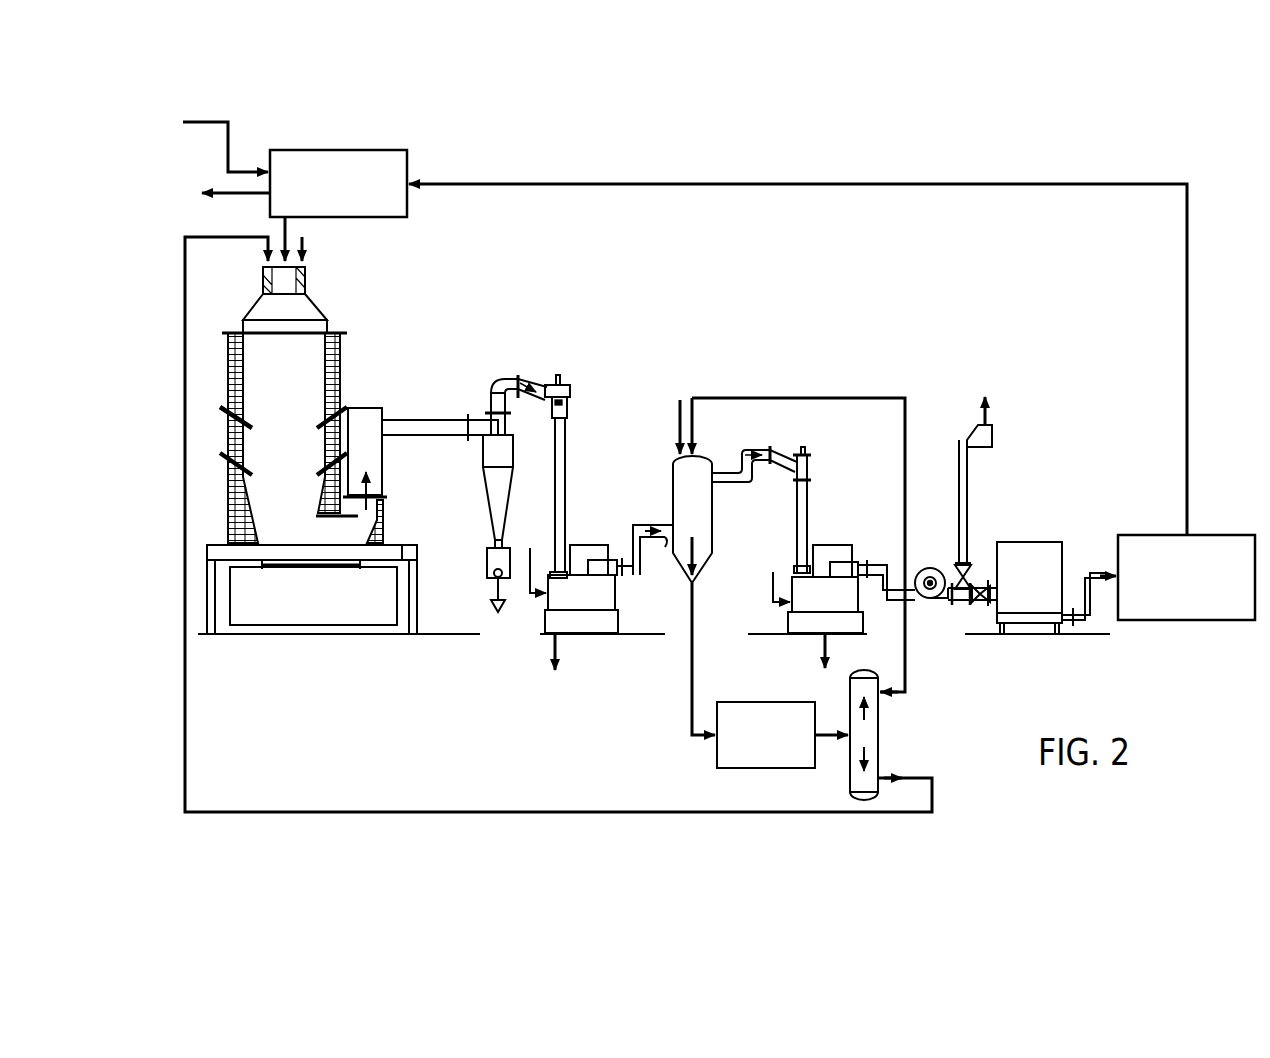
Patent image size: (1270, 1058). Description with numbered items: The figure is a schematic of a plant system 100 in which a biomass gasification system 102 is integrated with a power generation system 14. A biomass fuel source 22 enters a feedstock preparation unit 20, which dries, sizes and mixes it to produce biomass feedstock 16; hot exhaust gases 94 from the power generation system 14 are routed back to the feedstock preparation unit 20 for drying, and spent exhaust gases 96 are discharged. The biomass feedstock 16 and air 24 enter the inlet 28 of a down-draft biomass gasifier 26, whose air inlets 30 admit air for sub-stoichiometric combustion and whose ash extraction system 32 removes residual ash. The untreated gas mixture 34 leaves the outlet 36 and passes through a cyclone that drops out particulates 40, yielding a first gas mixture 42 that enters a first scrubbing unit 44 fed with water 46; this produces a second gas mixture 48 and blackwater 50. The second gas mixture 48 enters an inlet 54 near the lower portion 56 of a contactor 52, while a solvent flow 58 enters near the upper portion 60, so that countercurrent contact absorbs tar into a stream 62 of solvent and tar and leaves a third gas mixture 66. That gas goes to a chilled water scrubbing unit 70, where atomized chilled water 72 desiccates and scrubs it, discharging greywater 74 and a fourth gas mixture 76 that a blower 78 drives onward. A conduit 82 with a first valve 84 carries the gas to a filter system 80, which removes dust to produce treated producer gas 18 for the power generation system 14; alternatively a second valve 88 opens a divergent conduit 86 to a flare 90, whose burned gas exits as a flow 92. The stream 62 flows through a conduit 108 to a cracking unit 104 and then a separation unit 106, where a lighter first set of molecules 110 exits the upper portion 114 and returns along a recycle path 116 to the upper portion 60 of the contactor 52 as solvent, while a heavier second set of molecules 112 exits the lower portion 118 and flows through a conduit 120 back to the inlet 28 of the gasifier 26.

The power generation system 14 is at (1195, 535).
The biomass feedstock 16 is at (282, 240).
The treated producer gas 18 is at (1112, 572).
The feedstock preparation unit 20 is at (345, 150).
The biomass fuel source 22 is at (228, 140).
The air 24 is at (305, 248).
The biomass gasifier 26 is at (326, 447).
The inlet 28 is at (306, 280).
The air inlets 30 is at (214, 418).
The ash extraction system 32 is at (312, 625).
The untreated gas mixture 34 is at (372, 490).
The outlet 36 is at (400, 418).
The particulates 40 is at (496, 595).
The first gas mixture 42 is at (509, 377).
The first scrubbing unit 44 is at (578, 400).
The water 46 is at (532, 565).
The second gas mixture 48 is at (630, 525).
The blackwater 50 is at (550, 655).
The contactor 52 is at (714, 515).
The inlet 54 is at (666, 545).
The lower portion 56 is at (678, 588).
The solvent flow 58 is at (678, 428).
The upper portion 60 is at (706, 450).
The stream of solvent and tar 62 is at (695, 553).
The third gas mixture 66 is at (745, 448).
The chilled water scrubbing unit 70 is at (821, 463).
The chilled water 72 is at (768, 590).
The greywater 74 is at (822, 658).
The fourth gas mixture 76 is at (883, 580).
The blower 78 is at (932, 562).
The filter system 80 is at (1030, 542).
The conduit 82 is at (975, 605).
The first valve 84 is at (990, 605).
The divergent conduit 86 is at (968, 500).
The second valve 88 is at (970, 568).
The flare 90 is at (995, 432).
The flare exhaust 92 is at (988, 412).
The exhaust gases 94 is at (1190, 352).
The exhaust gases 96 is at (228, 198).
The plant system 100 is at (967, 146).
The biomass gasification system 102 is at (700, 247).
The cracking unit 104 is at (742, 768).
The separation unit 106 is at (880, 738).
The conduit 108 is at (690, 665).
The first set of molecules 110 is at (870, 708).
The second set of molecules 112 is at (870, 752).
The upper portion 114 is at (873, 668).
The recycle line to scrubber 116 is at (808, 398).
The lower portion 118 is at (838, 783).
The conduit 120 is at (634, 810).